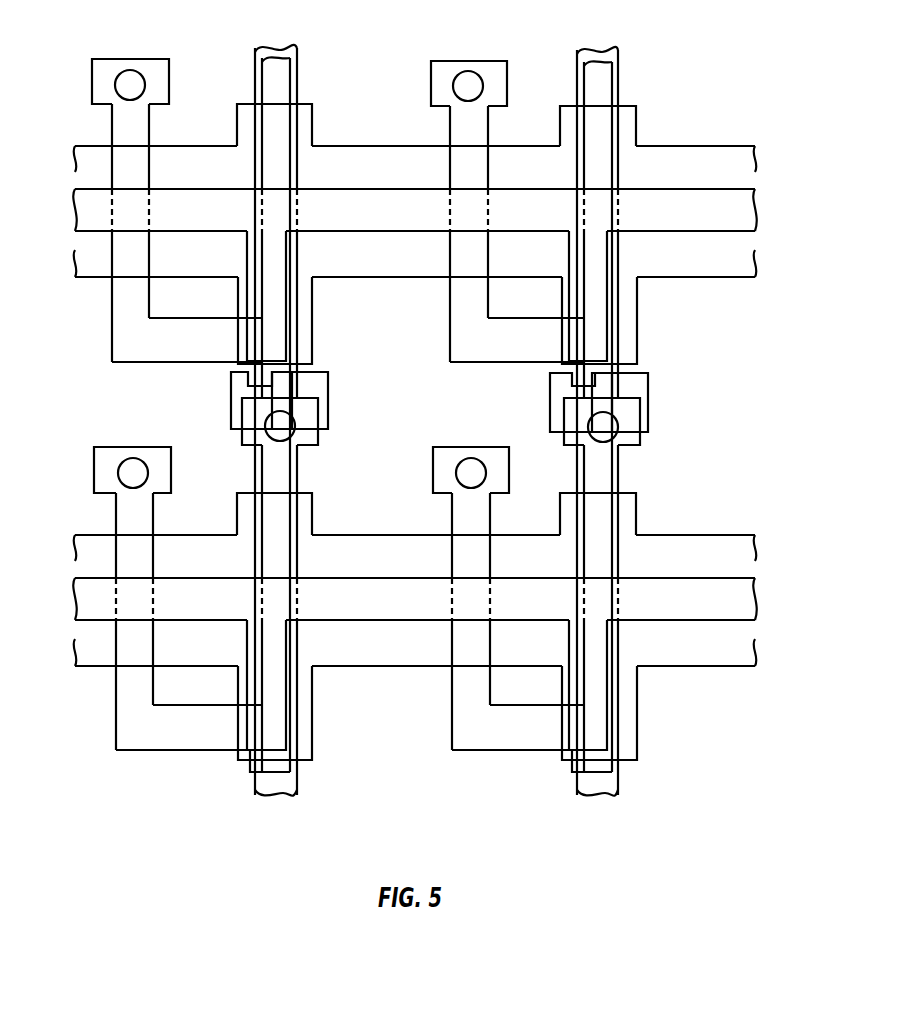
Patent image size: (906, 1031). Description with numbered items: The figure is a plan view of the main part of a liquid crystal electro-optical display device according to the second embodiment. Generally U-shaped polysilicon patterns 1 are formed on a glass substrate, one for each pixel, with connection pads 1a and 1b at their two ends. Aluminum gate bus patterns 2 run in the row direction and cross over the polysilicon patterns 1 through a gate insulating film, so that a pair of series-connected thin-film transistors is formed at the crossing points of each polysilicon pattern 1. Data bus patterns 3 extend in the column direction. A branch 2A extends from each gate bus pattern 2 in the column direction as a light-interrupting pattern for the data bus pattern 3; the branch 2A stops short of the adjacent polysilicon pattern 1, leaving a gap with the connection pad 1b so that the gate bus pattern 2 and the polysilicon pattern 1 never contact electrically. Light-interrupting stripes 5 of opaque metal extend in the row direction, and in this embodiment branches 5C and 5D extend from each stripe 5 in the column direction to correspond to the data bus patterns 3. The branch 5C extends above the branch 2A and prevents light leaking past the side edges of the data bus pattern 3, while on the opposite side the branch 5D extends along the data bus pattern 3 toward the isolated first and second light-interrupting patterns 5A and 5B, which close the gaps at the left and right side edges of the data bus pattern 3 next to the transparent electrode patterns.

The polysilicon pattern 1 is at (112, 292).
The connection pad 1a is at (107, 59).
The connection pad 1b is at (307, 447).
The gate bus pattern 2 is at (70, 207).
The branch 2A is at (250, 765).
The data bus pattern 3 is at (259, 45).
The light-interrupting stripe 5 is at (392, 531).
The first light-interrupting pattern 5A is at (231, 412).
The second light-interrupting pattern 5B is at (330, 424).
The branch 5C is at (316, 349).
The branch 5D is at (313, 124).